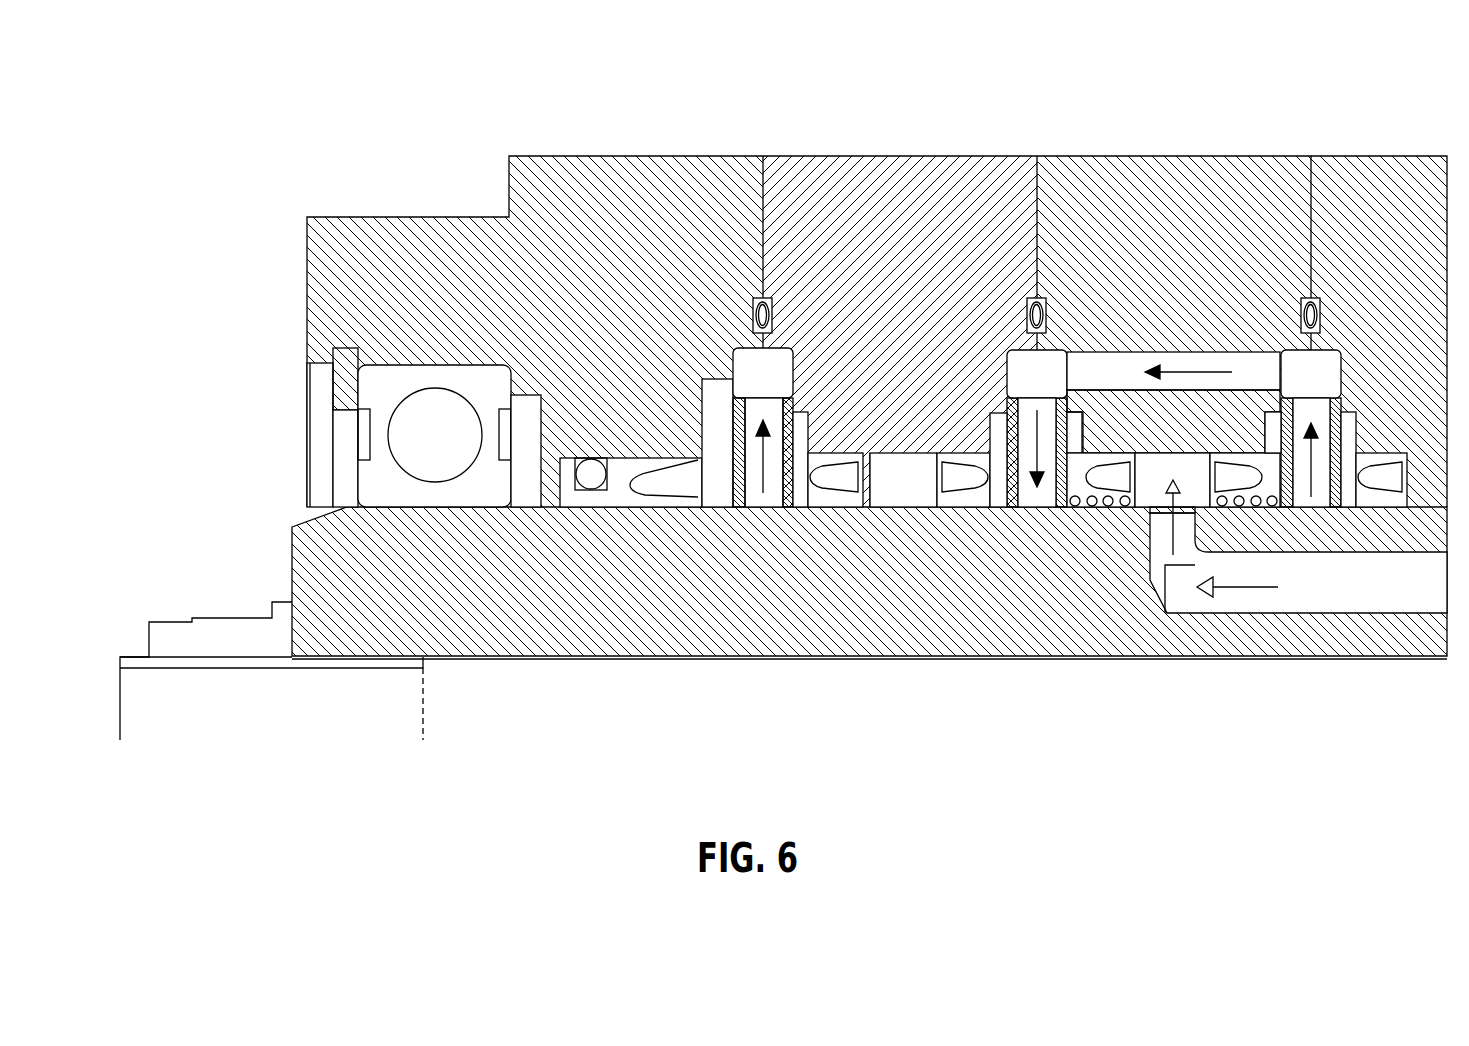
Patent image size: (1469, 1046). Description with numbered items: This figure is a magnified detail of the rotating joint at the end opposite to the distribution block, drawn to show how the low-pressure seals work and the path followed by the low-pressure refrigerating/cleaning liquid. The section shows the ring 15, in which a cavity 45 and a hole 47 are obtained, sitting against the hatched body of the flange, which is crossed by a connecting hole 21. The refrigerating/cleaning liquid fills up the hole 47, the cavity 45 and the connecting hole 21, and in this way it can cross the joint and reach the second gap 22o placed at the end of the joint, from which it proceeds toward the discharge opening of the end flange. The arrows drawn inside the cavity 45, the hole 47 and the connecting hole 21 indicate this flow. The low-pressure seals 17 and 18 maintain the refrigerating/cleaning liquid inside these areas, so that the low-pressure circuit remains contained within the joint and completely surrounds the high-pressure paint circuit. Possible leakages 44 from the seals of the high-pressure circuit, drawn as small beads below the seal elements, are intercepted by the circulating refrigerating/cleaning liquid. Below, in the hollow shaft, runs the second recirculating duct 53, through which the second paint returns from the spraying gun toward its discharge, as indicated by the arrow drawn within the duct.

The ring 15 is at (739, 482).
The seal 17 is at (620, 470).
The seal 18 is at (757, 305).
The connecting hole 21 is at (1107, 367).
The second gap 22o is at (718, 468).
The leakages 44 is at (1222, 507).
The cavity 45 is at (1315, 378).
The hole 47 is at (778, 490).
The second recirculating duct 53 is at (1383, 578).